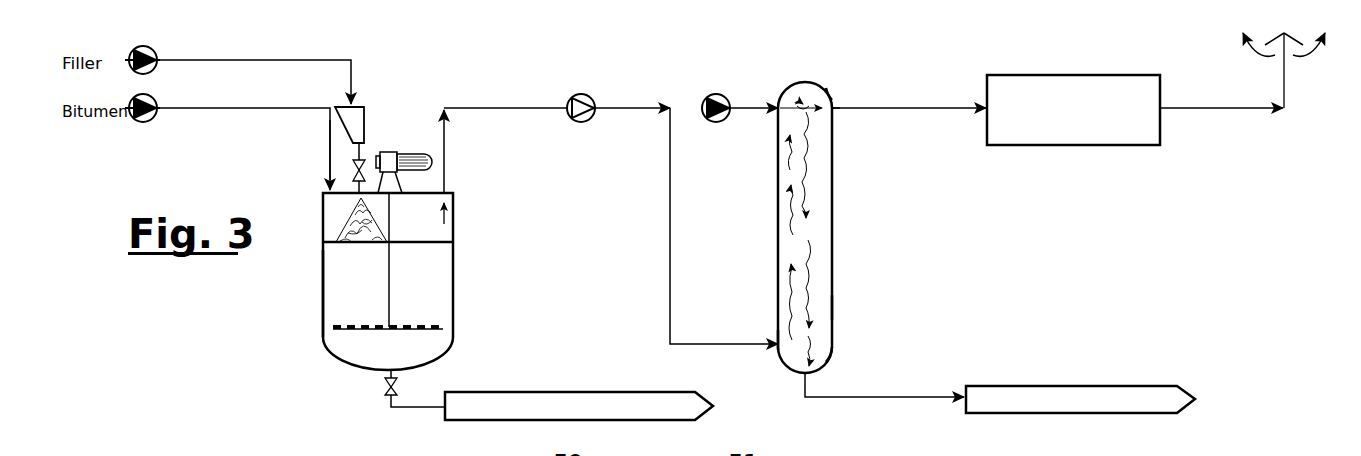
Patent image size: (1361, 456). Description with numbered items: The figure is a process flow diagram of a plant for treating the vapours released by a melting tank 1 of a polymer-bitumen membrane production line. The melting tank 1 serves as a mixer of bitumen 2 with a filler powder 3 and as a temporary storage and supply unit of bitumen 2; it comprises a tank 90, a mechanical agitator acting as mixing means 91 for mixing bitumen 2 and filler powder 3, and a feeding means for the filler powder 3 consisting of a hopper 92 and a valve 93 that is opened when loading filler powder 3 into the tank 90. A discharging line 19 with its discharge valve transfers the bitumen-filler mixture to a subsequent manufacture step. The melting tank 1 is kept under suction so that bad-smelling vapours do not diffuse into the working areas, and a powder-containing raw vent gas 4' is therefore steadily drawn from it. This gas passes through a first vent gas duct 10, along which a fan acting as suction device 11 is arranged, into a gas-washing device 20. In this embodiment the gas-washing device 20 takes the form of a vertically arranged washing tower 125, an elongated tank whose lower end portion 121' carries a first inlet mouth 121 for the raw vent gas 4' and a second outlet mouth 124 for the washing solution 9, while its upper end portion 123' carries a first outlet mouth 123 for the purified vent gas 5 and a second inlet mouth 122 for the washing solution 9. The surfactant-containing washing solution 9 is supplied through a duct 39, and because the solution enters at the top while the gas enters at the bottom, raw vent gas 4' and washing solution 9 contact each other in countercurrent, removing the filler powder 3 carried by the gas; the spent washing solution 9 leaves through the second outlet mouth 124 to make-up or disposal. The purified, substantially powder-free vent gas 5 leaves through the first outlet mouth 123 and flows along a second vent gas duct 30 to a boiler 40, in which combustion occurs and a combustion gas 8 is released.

The melting tank 1 is at (308, 355).
The bitumen 2 is at (265, 108).
The filler powder 3 is at (268, 60).
The powder-containing raw vent gas 4' is at (619, 241).
The purified vent gas 5 is at (808, 106).
The combustion gas 8 is at (1322, 48).
The washing solution 9 is at (808, 268).
The first vent gas duct 10 is at (548, 108).
The suction device 11 is at (578, 122).
The discharging line 19 is at (421, 407).
The gas-washing device 20 is at (848, 237).
The second vent gas duct 30 is at (922, 108).
The duct 39 is at (762, 106).
The boiler 40 is at (982, 77).
The tank 90 is at (323, 317).
The mixing means 91 is at (428, 332).
The hopper 92 is at (365, 125).
The valve 93 is at (307, 150).
The first inlet mouth 121 is at (738, 360).
The end portion 121' is at (878, 360).
The second inlet mouth 122 is at (778, 110).
The first outlet mouth 123 is at (858, 139).
The end portion 123' is at (866, 80).
The second outlet mouth 124 is at (804, 375).
The washing tower 125 is at (836, 308).